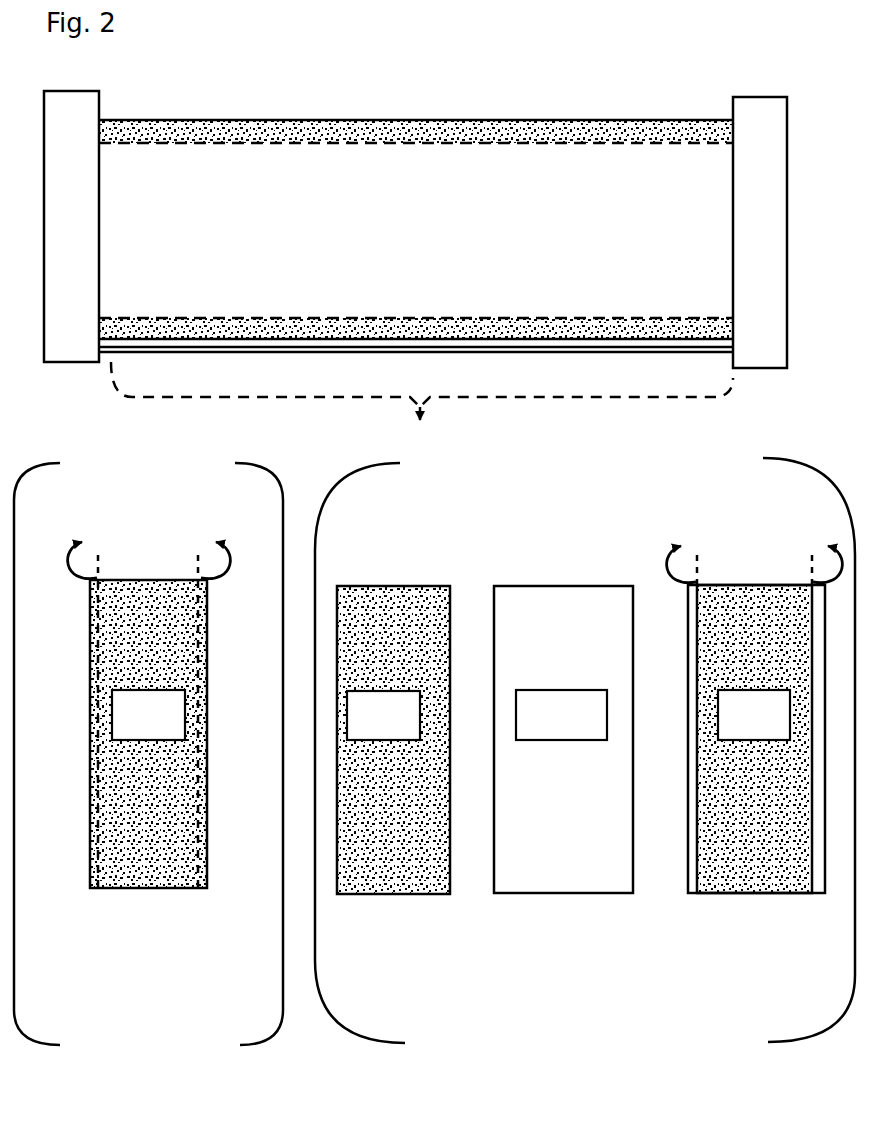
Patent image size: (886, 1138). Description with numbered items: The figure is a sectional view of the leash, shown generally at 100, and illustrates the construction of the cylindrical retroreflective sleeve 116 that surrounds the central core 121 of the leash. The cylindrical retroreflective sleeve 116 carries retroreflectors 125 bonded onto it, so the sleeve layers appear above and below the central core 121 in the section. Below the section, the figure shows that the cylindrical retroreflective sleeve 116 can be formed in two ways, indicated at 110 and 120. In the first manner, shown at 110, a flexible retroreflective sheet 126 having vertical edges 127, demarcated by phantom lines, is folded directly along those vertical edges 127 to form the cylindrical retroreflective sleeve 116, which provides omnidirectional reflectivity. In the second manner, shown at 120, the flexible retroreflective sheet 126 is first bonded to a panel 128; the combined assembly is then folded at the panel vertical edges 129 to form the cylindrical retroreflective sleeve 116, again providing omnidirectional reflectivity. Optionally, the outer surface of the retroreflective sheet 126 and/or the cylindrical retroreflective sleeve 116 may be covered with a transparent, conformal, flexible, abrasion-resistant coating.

The sectional view of the leash 100 is at (184, 93).
The first manner of forming the sleeve 110 is at (136, 529).
The cylindrical retroreflective sleeve 116 is at (702, 113).
The second manner of forming the sleeve 120 is at (443, 538).
The central core 121 is at (424, 232).
The retroreflectors 125 is at (375, 119).
The flexible retroreflective sheet 126 is at (172, 728).
The vertical edges 127 is at (98, 888).
The panel 128 is at (585, 728).
The panel vertical edges 129 is at (700, 893).